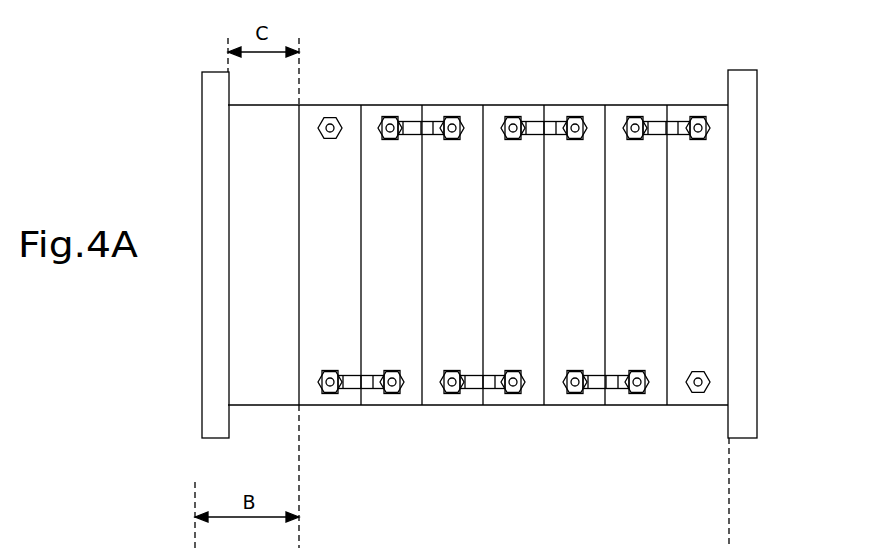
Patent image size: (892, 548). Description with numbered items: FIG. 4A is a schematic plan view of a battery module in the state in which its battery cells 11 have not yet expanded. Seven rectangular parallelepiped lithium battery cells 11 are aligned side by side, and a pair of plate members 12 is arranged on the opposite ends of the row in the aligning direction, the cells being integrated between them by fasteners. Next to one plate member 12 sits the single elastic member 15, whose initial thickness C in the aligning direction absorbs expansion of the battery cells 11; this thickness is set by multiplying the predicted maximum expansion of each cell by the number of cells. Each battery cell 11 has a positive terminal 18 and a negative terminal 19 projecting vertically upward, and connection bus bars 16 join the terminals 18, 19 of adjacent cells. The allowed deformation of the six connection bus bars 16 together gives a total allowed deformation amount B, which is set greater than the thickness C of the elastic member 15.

The battery cells 11 is at (340, 418).
The plate members 12 is at (202, 162).
The elastic member 15 is at (265, 408).
The connection bus bars 16 is at (413, 121).
The positive terminals 18 is at (392, 116).
The negative terminals 19 is at (330, 116).